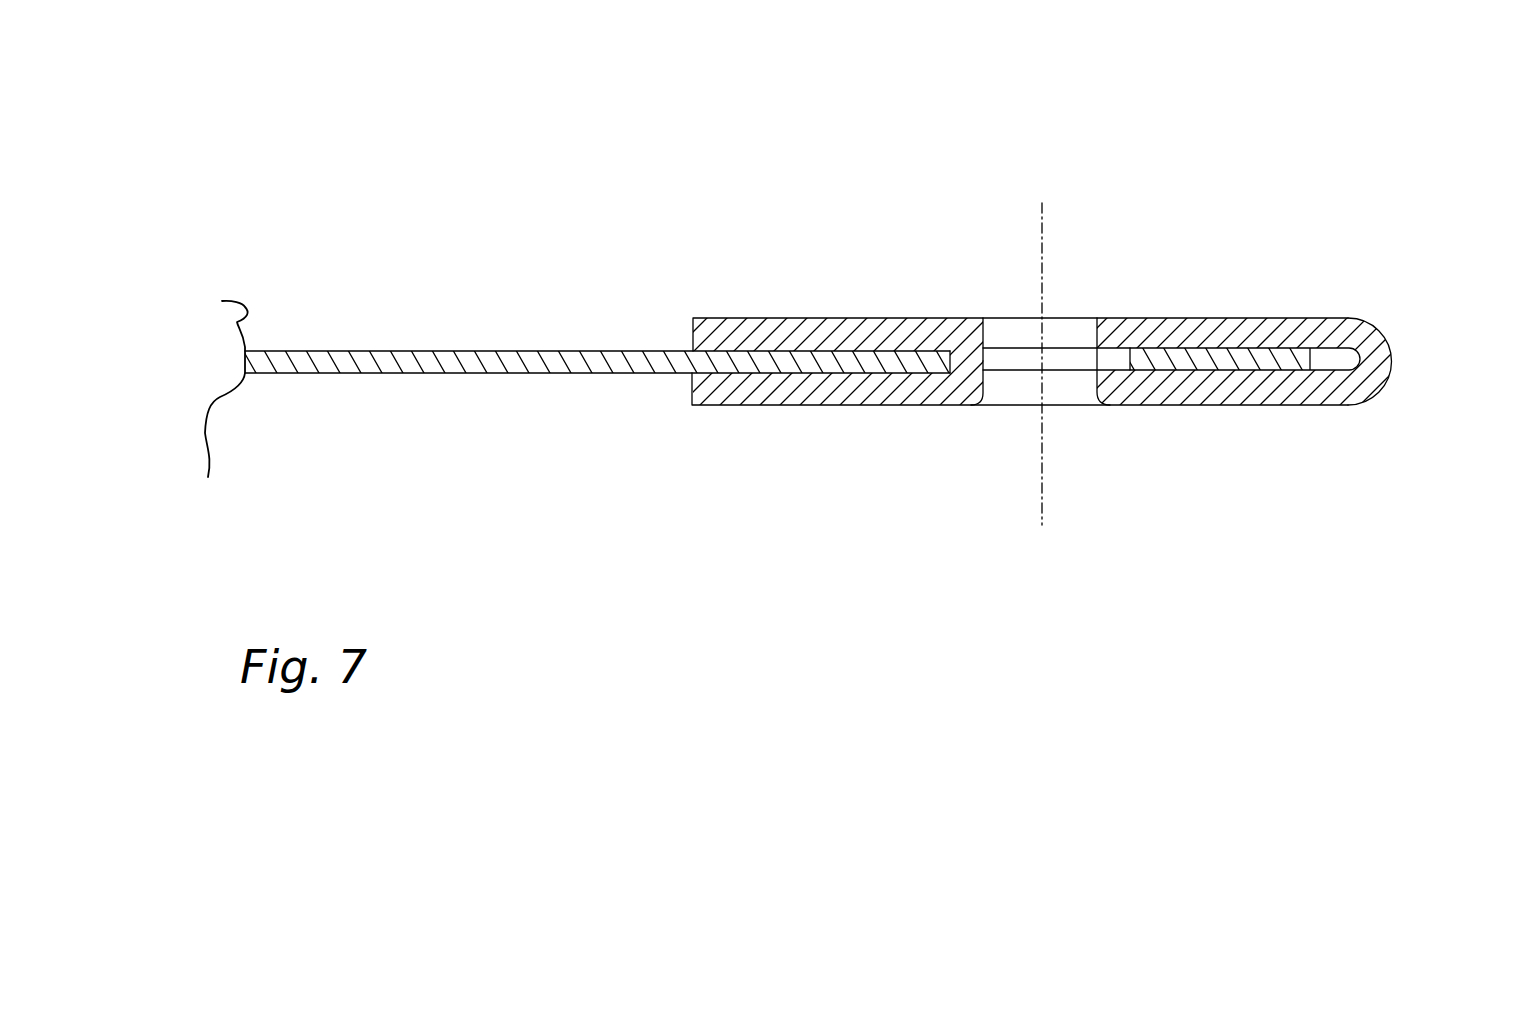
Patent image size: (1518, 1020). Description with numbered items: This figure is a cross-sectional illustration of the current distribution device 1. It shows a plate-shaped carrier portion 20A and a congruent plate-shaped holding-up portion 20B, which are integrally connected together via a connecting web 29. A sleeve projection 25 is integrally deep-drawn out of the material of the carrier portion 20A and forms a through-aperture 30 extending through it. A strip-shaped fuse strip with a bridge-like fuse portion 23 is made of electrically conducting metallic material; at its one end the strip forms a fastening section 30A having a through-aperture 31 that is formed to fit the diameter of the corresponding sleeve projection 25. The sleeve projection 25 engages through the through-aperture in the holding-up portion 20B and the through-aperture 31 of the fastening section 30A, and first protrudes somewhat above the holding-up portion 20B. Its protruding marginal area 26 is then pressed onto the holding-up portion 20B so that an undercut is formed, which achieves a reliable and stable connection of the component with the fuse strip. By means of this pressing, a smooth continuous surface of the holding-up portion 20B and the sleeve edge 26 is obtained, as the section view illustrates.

The medical instrument 1 is at (627, 283).
The fuse portion 23 is at (523, 365).
The carrier portion 20A is at (827, 393).
The holding-up portion 20B is at (822, 332).
The marginal area 26 is at (949, 332).
The sleeve projection 25 is at (1003, 317).
The through-aperture 30 is at (1055, 387).
The fastening section 30A is at (1218, 372).
The connecting web 29 is at (1392, 343).
The through-aperture 31 is at (1145, 337).